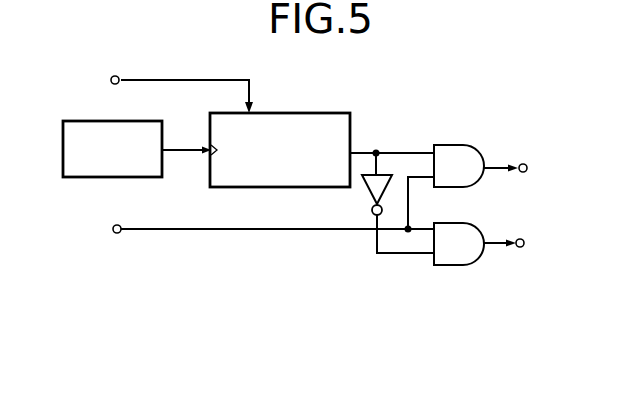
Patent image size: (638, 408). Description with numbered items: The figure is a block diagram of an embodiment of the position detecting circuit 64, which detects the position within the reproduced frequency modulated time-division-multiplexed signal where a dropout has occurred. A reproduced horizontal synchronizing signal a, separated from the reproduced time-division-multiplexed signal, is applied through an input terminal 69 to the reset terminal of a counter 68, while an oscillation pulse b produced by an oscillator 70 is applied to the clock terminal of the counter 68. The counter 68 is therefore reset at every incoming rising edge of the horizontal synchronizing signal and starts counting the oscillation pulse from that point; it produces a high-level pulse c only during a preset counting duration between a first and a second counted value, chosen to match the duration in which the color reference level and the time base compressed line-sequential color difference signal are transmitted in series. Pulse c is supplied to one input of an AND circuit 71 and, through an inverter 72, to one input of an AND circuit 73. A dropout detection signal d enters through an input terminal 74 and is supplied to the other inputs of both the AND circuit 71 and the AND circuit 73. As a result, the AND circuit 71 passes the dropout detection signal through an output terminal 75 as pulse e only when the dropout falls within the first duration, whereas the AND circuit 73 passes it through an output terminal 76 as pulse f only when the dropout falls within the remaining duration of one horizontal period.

The position detecting circuit 64 is at (425, 98).
The counter 68 is at (308, 113).
The input terminal 69 is at (117, 76).
The oscillator 70 is at (84, 128).
The AND circuit 71 is at (457, 146).
The inverter 72 is at (368, 190).
The AND circuit 73 is at (455, 266).
The input terminal 74 is at (117, 233).
The output terminal 75 is at (526, 164).
The output terminal 76 is at (524, 240).